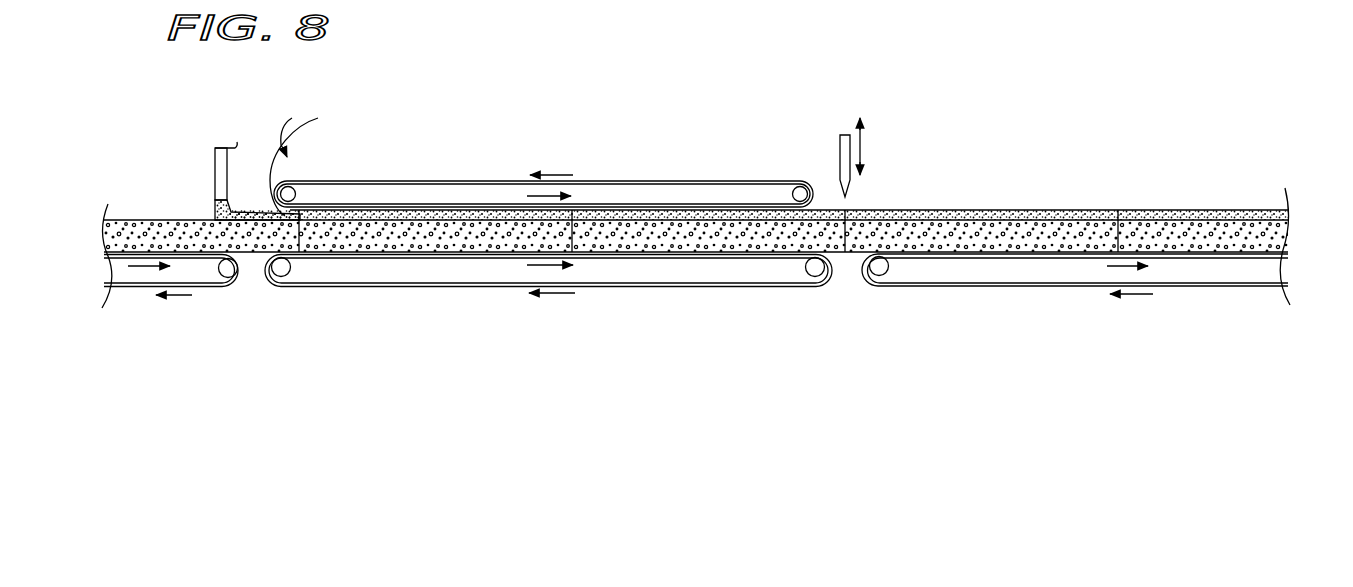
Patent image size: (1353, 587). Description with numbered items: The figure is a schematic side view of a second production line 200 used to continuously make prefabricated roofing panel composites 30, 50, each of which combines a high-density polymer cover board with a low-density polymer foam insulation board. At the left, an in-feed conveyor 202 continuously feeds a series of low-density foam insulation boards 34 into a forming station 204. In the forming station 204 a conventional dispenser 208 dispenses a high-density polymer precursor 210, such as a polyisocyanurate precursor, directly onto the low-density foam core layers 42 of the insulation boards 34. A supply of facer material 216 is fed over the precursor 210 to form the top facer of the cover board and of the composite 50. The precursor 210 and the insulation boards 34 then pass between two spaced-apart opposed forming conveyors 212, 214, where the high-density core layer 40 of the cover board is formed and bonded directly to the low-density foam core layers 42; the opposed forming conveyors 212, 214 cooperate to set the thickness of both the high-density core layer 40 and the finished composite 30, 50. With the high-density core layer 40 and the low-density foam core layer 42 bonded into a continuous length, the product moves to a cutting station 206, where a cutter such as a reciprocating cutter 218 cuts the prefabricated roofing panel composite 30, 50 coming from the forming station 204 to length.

The second production line 200 is at (1018, 50).
The in-feed conveyor 202 is at (133, 287).
The forming station 204 is at (453, 108).
The cutting station 206 is at (920, 155).
The dispenser 208 is at (215, 175).
The high-density polymer or predominantly polymer material precursor 210 is at (253, 212).
The forming conveyor 212 is at (482, 148).
The forming conveyor 214 is at (653, 288).
The facer material 216 is at (292, 118).
The reciprocating cutter 218 is at (840, 147).
The low-density polymer or predominantly polymer material foam insulation board 34 is at (152, 236).
The high-density polymer or predominantly polymer material core layer 40 is at (647, 185).
The low-density foam core layer 42 is at (998, 246).
The prefabricated roofing panel composite 30 is at (1077, 142).
The prefabricated roofing panel composite 50 is at (1203, 231).